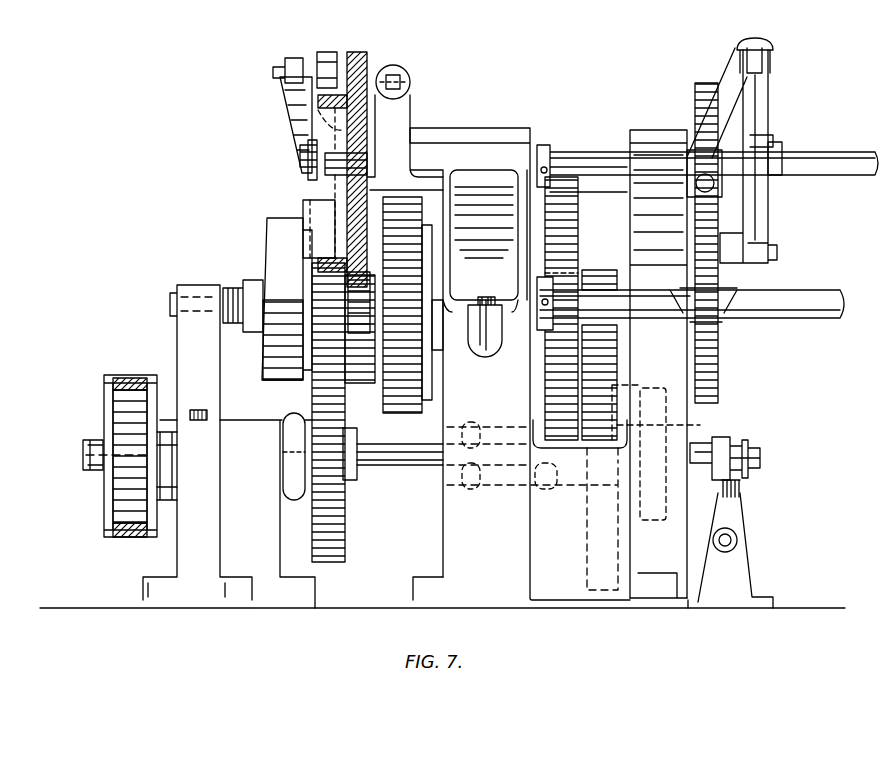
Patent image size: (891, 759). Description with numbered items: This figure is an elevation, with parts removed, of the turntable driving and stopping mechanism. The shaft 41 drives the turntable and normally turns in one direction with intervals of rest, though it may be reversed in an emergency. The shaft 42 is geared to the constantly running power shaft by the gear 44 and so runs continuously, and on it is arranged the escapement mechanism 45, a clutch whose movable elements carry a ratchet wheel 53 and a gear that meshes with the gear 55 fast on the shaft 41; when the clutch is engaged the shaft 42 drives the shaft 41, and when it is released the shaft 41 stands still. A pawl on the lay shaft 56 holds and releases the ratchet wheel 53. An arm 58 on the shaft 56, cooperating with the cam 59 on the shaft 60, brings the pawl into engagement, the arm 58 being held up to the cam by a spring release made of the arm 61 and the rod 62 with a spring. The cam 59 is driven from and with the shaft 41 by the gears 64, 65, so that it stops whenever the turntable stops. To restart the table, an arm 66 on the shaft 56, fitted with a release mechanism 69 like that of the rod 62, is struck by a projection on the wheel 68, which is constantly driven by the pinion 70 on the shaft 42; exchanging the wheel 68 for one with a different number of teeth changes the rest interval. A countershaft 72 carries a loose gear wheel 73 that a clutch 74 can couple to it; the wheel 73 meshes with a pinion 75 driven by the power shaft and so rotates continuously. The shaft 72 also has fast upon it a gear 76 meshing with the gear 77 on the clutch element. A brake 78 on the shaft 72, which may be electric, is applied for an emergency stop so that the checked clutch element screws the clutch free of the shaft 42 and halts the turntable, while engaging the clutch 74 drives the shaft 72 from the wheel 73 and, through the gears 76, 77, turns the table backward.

The shaft 41 is at (785, 327).
The shaft 42 is at (175, 296).
The gear 44 is at (550, 375).
The escapement mechanism 45 is at (302, 222).
The ratchet wheel 53 is at (362, 386).
The gear 55 is at (410, 413).
The lay shaft 56 is at (300, 153).
The arm 58 is at (287, 92).
The cam 59 is at (300, 112).
The shaft 60 is at (330, 162).
The arm 61 is at (378, 70).
The rod 62 is at (398, 80).
The gear 64 is at (360, 60).
The gear 65 is at (356, 292).
The arm 66 is at (770, 215).
The wheel 68 is at (700, 84).
The release mechanism 69 is at (772, 68).
The pinion 70 is at (730, 320).
The countershaft 72 is at (392, 463).
The gear wheel 73 is at (608, 390).
The clutch 74 is at (686, 425).
The pinion 75 is at (602, 256).
The gear 76 is at (345, 549).
The gear 77 is at (306, 393).
The brake 78 is at (122, 378).